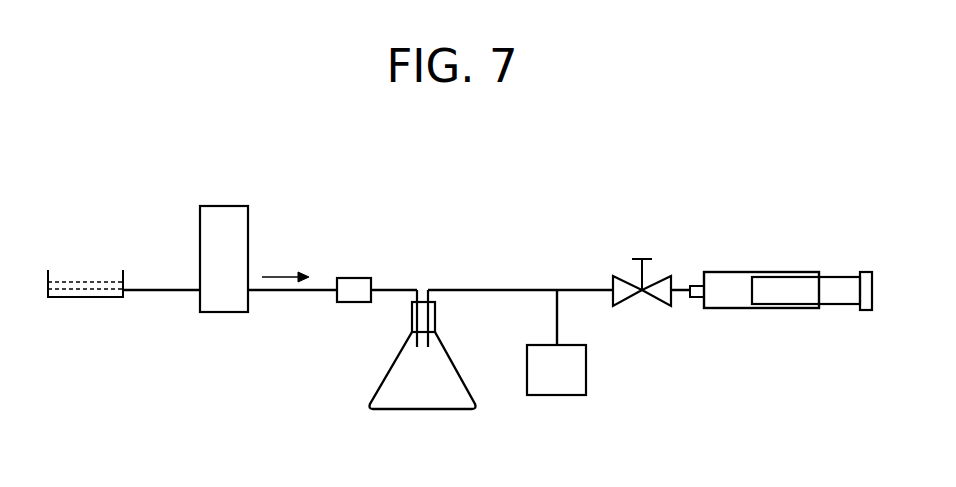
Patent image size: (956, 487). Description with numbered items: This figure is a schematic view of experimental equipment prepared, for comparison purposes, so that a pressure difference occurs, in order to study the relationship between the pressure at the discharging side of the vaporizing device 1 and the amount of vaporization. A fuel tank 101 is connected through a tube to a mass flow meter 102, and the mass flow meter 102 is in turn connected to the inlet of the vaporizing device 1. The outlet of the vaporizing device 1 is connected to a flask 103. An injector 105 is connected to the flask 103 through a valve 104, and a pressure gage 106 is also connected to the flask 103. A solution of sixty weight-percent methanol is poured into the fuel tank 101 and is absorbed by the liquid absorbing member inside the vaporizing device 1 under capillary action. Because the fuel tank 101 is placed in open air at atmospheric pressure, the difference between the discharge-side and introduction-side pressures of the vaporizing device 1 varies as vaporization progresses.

The vaporizing device 1 is at (351, 278).
The fuel tank 101 is at (90, 297).
The mass flow meter 102 is at (222, 206).
The flask 103 is at (423, 410).
The valve 104 is at (657, 306).
The injector 105 is at (733, 272).
The pressure gage 106 is at (558, 395).